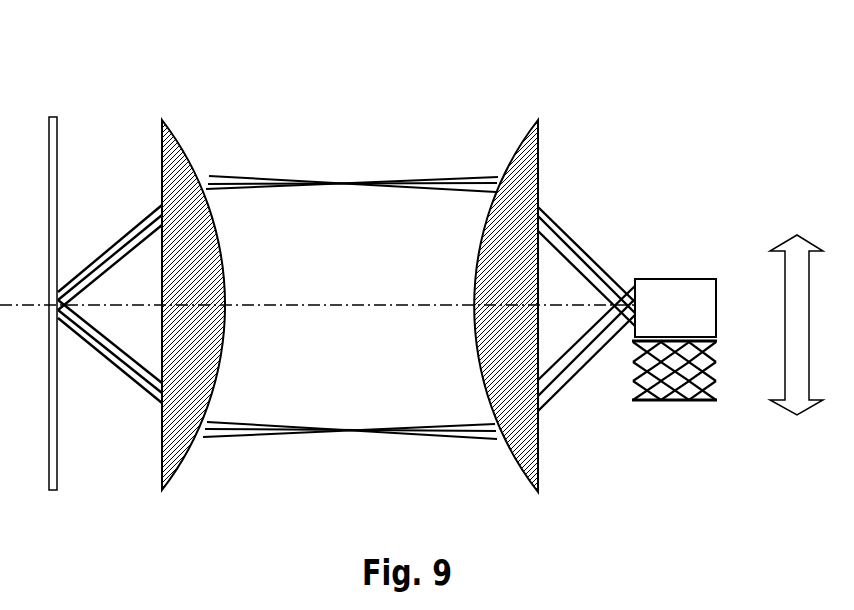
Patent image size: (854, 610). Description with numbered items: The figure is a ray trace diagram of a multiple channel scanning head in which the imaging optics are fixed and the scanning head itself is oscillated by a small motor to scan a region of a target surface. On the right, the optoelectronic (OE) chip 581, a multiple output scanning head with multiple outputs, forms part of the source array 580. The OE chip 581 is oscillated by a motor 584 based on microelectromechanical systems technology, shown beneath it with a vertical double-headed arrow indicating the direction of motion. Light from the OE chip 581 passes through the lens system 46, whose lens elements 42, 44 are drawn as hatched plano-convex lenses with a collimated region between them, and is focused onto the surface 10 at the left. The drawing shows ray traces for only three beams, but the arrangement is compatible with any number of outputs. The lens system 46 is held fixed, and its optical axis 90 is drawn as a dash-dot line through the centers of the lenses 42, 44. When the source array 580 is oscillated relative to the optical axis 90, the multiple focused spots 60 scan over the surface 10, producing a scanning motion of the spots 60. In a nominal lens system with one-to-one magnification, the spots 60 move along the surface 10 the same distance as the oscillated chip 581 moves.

The surface 10 is at (58, 165).
The first lens 42 is at (206, 300).
The second lens 44 is at (518, 300).
The lens system 46 is at (350, 390).
The multiple focused spots 60 is at (58, 322).
The optical axis 90 is at (240, 303).
The source array 580 is at (727, 323).
The optoelectronic (OE) chip 581 is at (696, 319).
The motor 584 is at (695, 381).